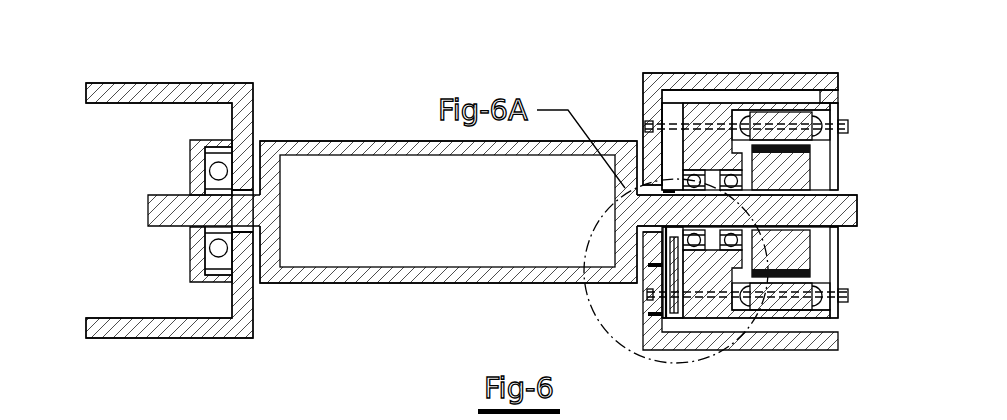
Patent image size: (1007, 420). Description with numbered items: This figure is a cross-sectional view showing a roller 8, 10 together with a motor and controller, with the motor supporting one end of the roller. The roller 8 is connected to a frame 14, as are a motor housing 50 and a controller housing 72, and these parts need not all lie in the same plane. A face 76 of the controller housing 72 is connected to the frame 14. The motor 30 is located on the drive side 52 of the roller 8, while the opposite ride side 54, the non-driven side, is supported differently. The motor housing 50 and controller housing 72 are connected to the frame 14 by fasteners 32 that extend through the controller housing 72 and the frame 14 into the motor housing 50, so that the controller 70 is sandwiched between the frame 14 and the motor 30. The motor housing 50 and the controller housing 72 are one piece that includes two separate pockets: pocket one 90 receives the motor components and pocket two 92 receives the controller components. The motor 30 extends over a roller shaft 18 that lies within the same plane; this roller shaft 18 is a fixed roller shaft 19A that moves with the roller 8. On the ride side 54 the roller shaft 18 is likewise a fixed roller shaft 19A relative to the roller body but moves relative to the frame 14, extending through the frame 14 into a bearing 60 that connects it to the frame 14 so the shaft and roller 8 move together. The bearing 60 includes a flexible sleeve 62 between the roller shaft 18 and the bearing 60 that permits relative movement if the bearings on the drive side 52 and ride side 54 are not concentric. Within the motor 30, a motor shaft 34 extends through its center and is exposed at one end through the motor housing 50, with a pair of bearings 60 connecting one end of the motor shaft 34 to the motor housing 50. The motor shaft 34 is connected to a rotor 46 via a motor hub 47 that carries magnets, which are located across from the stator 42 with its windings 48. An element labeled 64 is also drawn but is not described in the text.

The roller 8 is at (352, 128).
The hub 10 is at (448, 212).
The frame 14 is at (114, 83).
The roller shaft 18 is at (144, 272).
The fixed roller shaft 19A is at (838, 213).
The motor 30 is at (856, 185).
The fasteners 32 is at (848, 126).
The motor shaft 34 is at (663, 230).
The stator 42 is at (778, 117).
The rotor 46 is at (813, 259).
The motor hub 47 is at (803, 172).
The windings 48 is at (740, 123).
The motor housing 50 is at (820, 306).
The drive side 52 is at (762, 366).
The ride side 54 is at (190, 356).
The bearing 60 is at (187, 277).
The flexible sleeve 62 is at (210, 152).
The coupling 64 is at (663, 191).
The controller 70 is at (666, 266).
The controller housing 72 is at (677, 316).
The face 76 is at (665, 312).
The pocket one 90 is at (822, 95).
The pocket two 92 is at (667, 99).